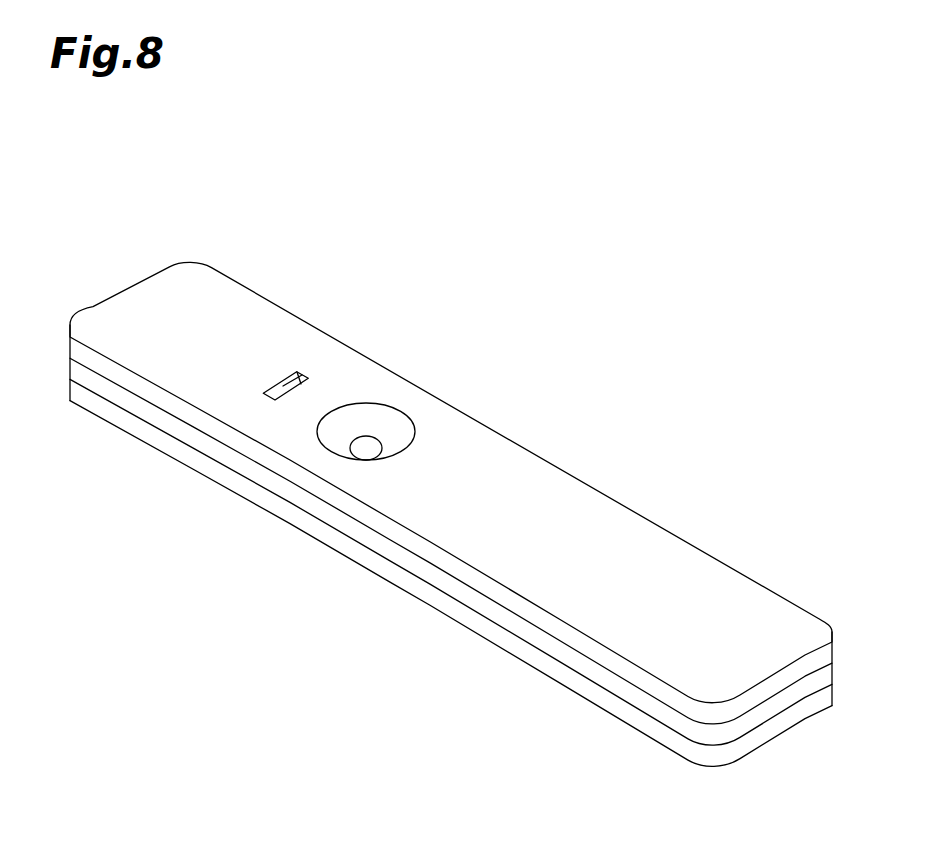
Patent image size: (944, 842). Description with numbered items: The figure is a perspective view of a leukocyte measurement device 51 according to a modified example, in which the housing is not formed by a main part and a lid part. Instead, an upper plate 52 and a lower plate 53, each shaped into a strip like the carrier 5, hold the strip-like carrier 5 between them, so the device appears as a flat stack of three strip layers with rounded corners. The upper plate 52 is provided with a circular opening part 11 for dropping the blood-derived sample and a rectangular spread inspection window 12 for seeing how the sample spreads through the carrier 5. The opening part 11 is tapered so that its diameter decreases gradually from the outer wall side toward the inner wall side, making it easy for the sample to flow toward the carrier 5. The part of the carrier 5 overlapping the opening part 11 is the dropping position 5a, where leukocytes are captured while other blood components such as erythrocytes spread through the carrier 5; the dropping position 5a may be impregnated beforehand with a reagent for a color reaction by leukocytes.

The leukocyte measurement device 51 is at (145, 218).
The upper plate 52 is at (713, 598).
The lower plate 53 is at (583, 688).
The carrier 5 is at (357, 537).
The dropping position 5a is at (367, 446).
The opening part 11 is at (400, 448).
The spread inspection window 12 is at (305, 372).